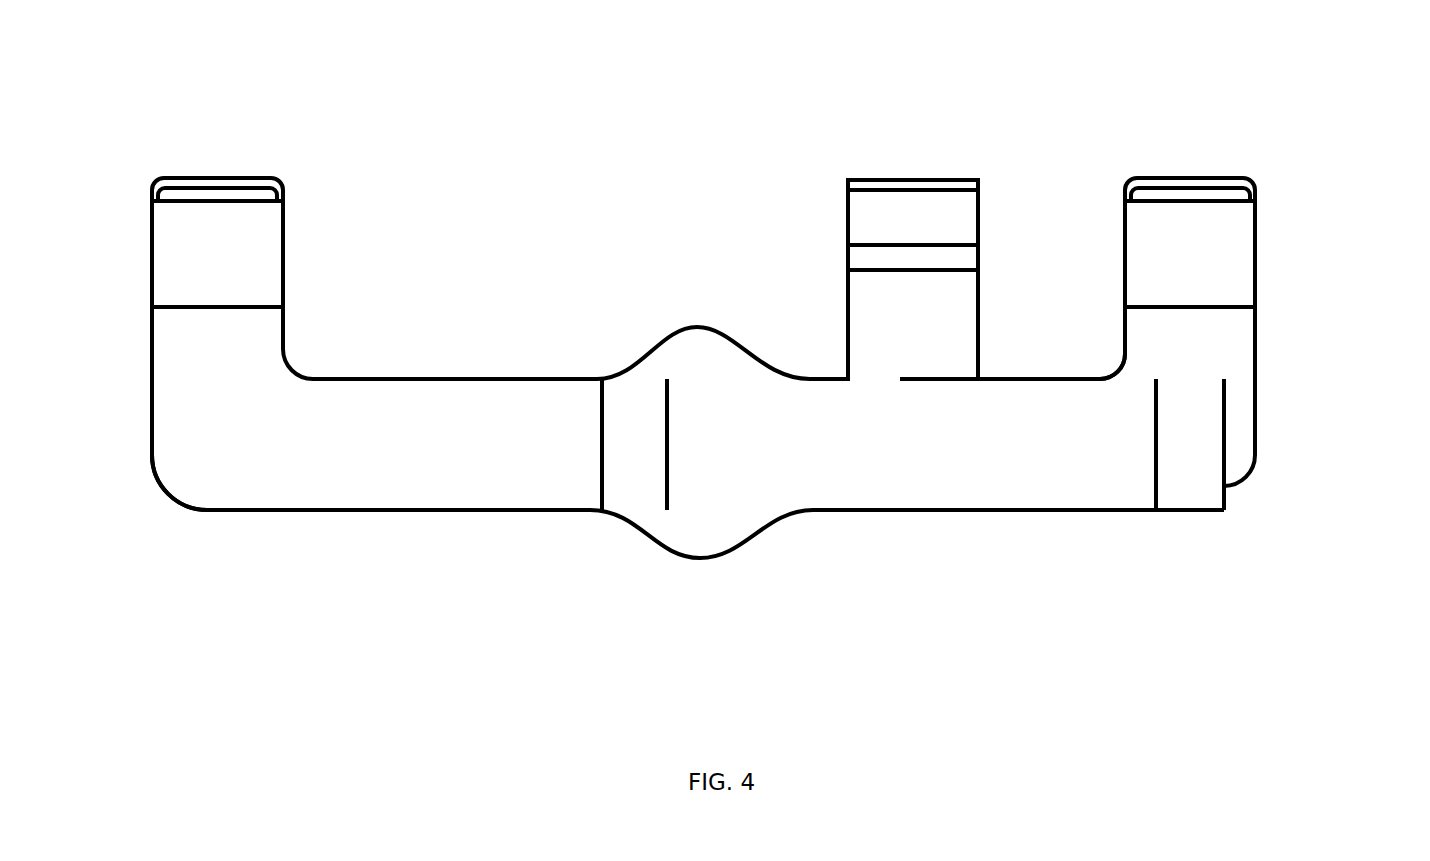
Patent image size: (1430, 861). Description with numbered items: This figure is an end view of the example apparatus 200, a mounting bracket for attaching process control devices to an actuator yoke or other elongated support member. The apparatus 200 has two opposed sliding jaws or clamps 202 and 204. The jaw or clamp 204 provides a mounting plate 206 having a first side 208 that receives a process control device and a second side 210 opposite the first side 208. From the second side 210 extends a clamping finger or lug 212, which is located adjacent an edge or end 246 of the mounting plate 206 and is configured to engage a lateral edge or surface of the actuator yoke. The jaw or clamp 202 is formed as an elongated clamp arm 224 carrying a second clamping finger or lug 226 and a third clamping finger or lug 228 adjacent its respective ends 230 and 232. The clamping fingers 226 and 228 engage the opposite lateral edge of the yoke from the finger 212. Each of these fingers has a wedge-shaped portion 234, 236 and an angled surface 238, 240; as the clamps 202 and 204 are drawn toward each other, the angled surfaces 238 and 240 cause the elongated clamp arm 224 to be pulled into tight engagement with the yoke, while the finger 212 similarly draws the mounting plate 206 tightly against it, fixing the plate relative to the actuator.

The apparatus 200 is at (1077, 58).
The jaw or clamp 202 is at (190, 130).
The jaw or clamp 204 is at (1275, 477).
The mounting plate 206 is at (1224, 450).
The first side 208 is at (1117, 510).
The second side 210 is at (1133, 380).
The clamping finger or lug 212 is at (913, 176).
The elongated clamp arm 224 is at (438, 378).
The second clamping finger or lug 226 is at (1257, 262).
The third clamping finger or lug 228 is at (285, 278).
The end 230 is at (1237, 403).
The end 232 is at (182, 432).
The wedge-shaped portion 234 is at (1257, 226).
The wedge-shaped portion 236 is at (285, 228).
The angled surface 238 is at (1165, 248).
The angled surface 240 is at (200, 258).
The edge or end 246 is at (958, 478).